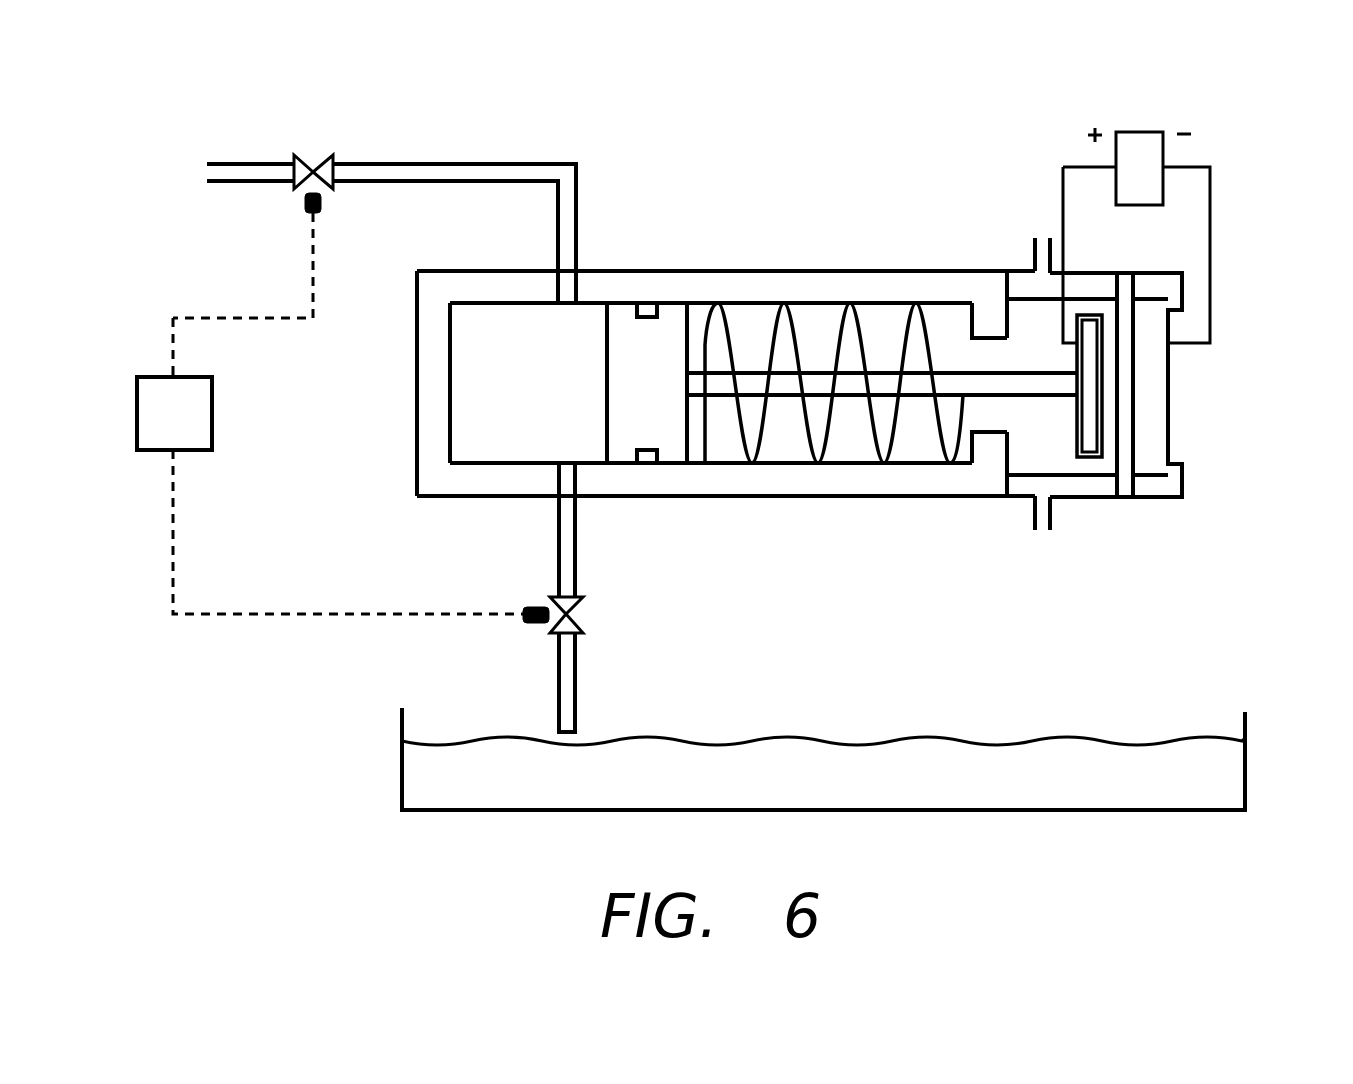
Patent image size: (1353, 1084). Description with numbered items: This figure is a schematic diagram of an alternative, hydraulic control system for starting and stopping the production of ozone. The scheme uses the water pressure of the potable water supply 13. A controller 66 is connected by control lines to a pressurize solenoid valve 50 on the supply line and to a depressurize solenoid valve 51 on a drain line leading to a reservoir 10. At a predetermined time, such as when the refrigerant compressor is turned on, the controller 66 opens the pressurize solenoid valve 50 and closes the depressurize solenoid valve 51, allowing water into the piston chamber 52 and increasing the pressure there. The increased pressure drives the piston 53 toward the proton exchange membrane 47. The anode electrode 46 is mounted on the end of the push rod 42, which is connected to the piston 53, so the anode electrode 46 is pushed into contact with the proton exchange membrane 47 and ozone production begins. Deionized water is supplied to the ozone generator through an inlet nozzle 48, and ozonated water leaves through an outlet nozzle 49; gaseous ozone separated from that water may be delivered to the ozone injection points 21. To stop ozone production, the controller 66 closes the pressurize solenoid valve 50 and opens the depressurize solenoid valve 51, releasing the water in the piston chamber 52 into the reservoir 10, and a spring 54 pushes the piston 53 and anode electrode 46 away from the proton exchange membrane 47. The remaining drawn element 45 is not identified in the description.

The reservoir 10 is at (1247, 777).
The potable water supply 13 is at (245, 162).
The ozone injection points 21 is at (425, 160).
The push rod 42 is at (753, 383).
The diaphragm 45 is at (1133, 458).
The anode electrode 46 is at (1078, 457).
The proton exchange membrane 47 is at (1123, 497).
The inlet nozzle 48 is at (1032, 507).
The outlet nozzle 49 is at (1032, 253).
The pressurize solenoid valve 50 is at (313, 170).
The depressurize solenoid valve 51 is at (572, 615).
The piston chamber 52 is at (463, 383).
The piston 53 is at (620, 443).
The spring 54 is at (840, 463).
The controller 66 is at (137, 410).